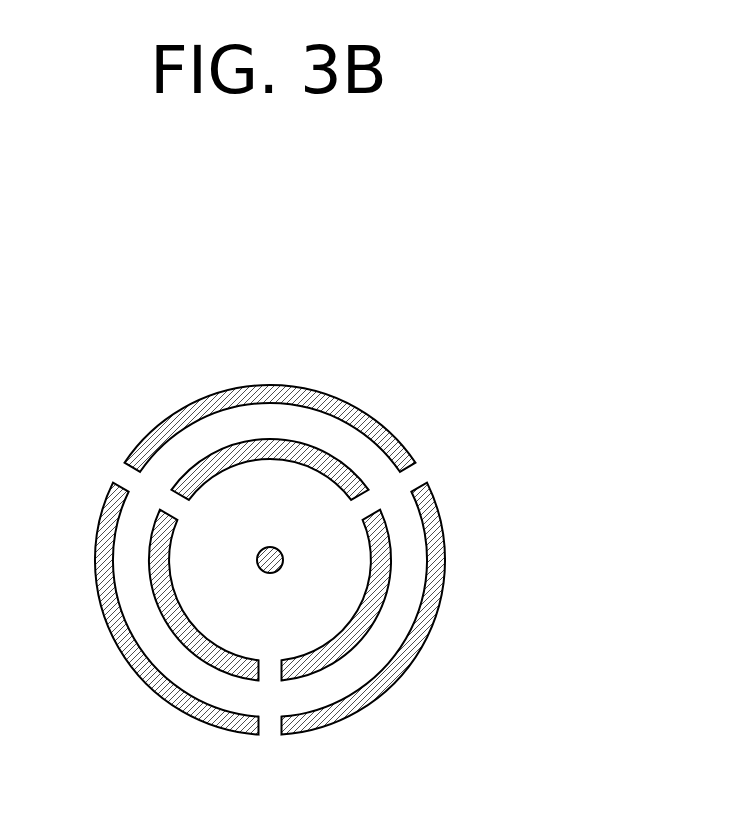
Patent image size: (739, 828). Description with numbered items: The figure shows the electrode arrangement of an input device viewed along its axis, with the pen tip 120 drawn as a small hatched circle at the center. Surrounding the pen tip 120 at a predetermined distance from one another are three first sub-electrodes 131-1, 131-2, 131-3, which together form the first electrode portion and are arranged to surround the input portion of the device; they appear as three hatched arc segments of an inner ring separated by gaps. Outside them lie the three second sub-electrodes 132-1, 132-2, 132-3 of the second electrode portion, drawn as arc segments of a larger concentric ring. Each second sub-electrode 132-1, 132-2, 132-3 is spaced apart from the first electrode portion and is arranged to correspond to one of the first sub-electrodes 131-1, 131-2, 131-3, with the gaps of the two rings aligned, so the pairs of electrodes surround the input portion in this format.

The pen tip 120 is at (282, 550).
The first sub-electrode 131-1 is at (332, 462).
The first sub-electrode 131-2 is at (388, 580).
The first sub-electrode 131-3 is at (170, 613).
The second sub-electrode 132-1 is at (302, 393).
The second sub-electrode 132-2 is at (408, 658).
The second sub-electrode 132-3 is at (165, 690).